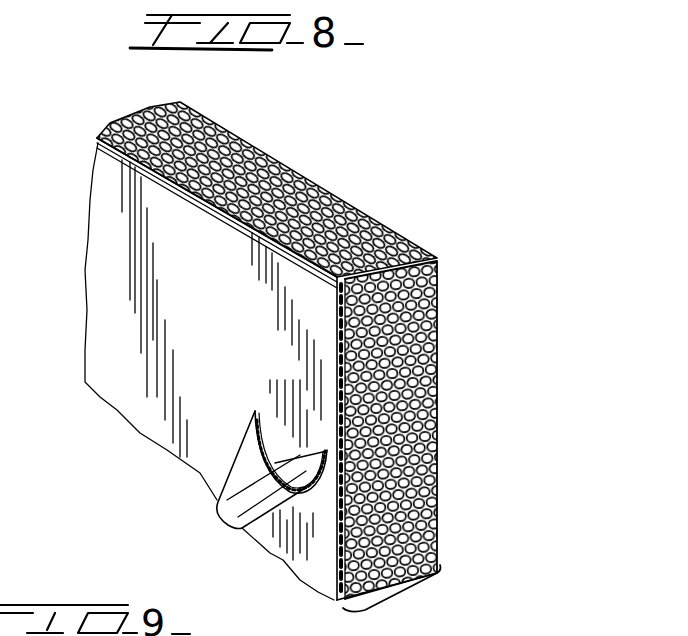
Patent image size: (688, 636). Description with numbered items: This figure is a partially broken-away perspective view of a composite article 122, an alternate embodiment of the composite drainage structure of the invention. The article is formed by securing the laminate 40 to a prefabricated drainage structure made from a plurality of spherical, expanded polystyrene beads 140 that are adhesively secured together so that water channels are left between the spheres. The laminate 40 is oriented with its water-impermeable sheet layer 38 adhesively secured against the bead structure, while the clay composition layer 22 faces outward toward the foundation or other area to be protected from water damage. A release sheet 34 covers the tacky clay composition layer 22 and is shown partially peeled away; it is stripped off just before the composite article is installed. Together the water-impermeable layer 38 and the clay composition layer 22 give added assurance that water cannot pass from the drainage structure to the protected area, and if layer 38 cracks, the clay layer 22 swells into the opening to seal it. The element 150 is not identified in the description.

The clay composition layer 22 is at (430, 268).
The release sheet 34 is at (262, 499).
The water-impermeable sheet layer 38 is at (345, 303).
The laminate 40 is at (131, 385).
The composite article 122 is at (303, 351).
The expanded polystyrene beads 140 is at (412, 522).
The base 150 is at (415, 607).